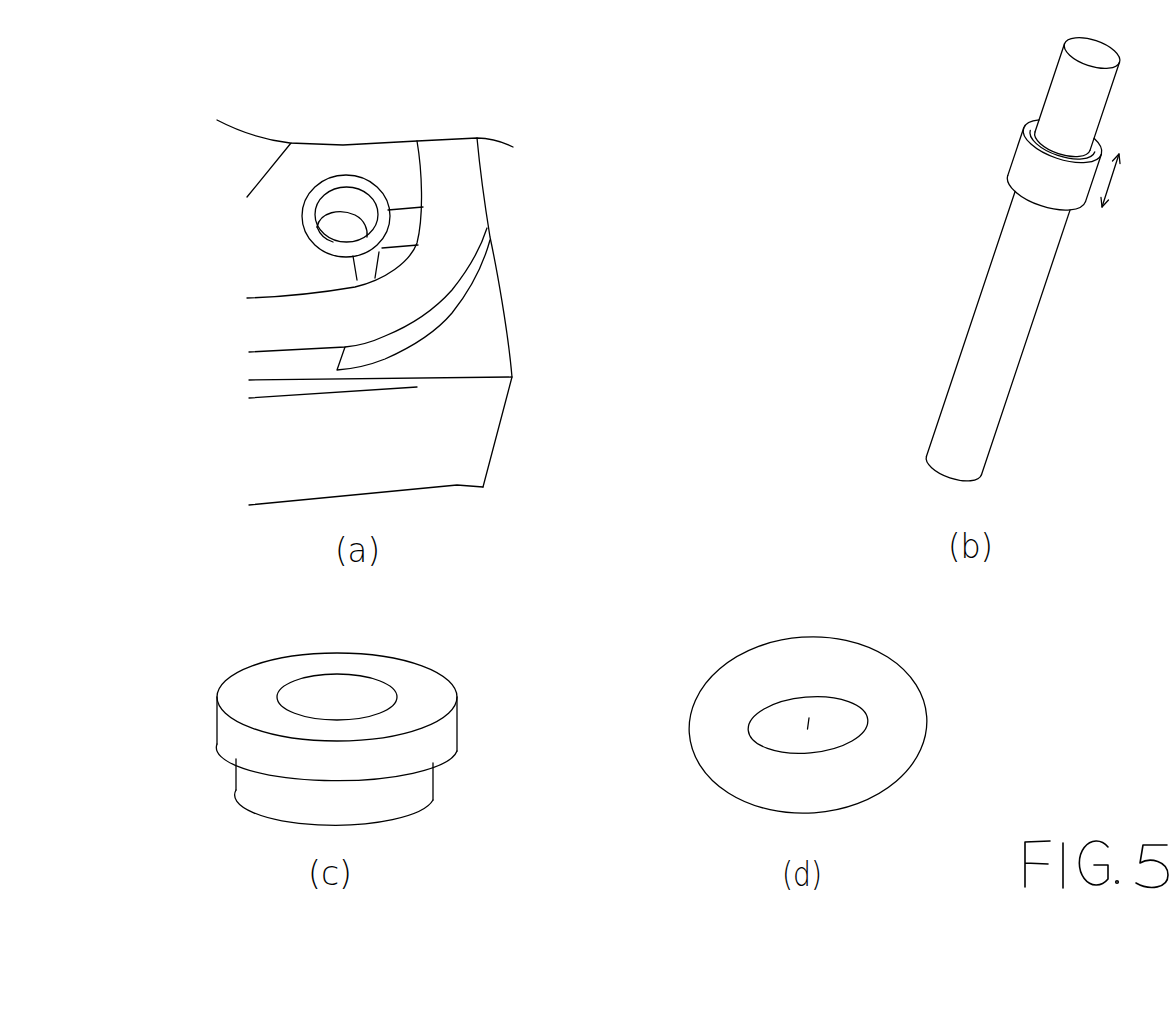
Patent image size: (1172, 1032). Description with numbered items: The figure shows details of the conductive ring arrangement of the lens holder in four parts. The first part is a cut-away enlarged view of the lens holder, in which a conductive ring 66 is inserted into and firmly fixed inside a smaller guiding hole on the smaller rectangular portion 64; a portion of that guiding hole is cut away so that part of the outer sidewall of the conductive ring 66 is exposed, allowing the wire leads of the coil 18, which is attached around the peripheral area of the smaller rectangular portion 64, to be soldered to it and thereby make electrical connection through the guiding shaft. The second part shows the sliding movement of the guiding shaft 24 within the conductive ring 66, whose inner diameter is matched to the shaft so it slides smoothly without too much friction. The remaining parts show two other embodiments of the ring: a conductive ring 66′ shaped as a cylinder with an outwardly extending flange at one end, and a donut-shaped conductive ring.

The coil 18 is at (447, 248).
The guiding shaft 24 is at (1043, 243).
The smaller rectangular portion 64 is at (406, 181).
The conductive ring 66 is at (357, 175).
The conductive ring 66′ is at (420, 668).